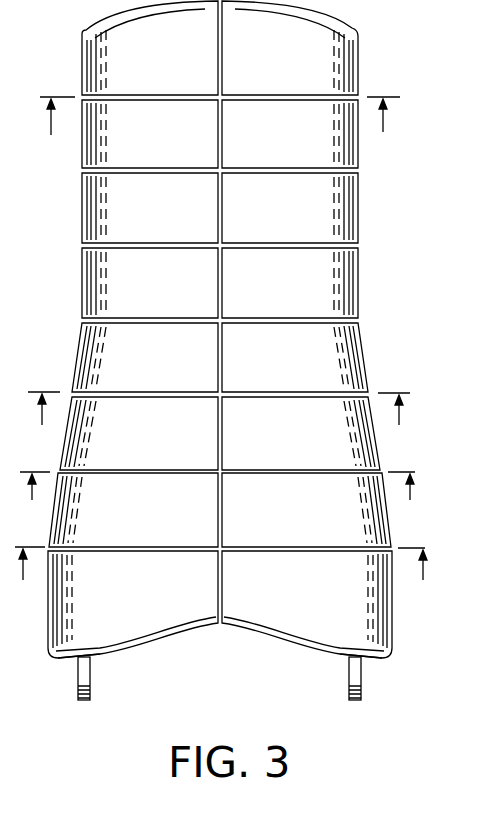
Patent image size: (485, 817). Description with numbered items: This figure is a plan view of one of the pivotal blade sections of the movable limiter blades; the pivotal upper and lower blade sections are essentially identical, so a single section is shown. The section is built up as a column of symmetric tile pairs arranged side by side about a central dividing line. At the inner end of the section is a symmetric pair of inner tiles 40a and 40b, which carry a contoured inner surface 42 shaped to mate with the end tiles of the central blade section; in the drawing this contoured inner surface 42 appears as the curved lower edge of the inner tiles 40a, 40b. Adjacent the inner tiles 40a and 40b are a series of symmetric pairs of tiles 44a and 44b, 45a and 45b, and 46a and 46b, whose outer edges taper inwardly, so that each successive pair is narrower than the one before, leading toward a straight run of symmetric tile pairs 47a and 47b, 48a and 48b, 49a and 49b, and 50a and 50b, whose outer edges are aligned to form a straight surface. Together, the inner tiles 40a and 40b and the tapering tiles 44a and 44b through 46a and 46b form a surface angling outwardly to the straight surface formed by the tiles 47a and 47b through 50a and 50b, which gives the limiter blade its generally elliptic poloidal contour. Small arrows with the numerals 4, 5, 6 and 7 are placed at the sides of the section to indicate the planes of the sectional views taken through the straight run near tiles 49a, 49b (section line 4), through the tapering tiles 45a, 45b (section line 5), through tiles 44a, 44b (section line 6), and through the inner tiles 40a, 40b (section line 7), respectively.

The inner tile 40a is at (170, 597).
The inner tile 40b is at (300, 597).
The contoured inner surface 42 is at (253, 630).
The tile 44a is at (170, 522).
The tile 44b is at (291, 522).
The tile 45a is at (168, 447).
The tile 45b is at (288, 447).
The tile 46a is at (178, 372).
The tile 46b is at (283, 372).
The tile 47a is at (176, 297).
The tile 47b is at (282, 297).
The tile 48a is at (178, 222).
The tile 48b is at (276, 222).
The tile 49a is at (183, 147).
The tile 49b is at (279, 147).
The tile 50a is at (188, 72).
The tile 50b is at (283, 72).
The section line 4- 4 is at (215, 122).
The section line 5- 5 is at (218, 412).
The section line 6- 6 is at (220, 492).
The section line 7- 7 is at (225, 572).